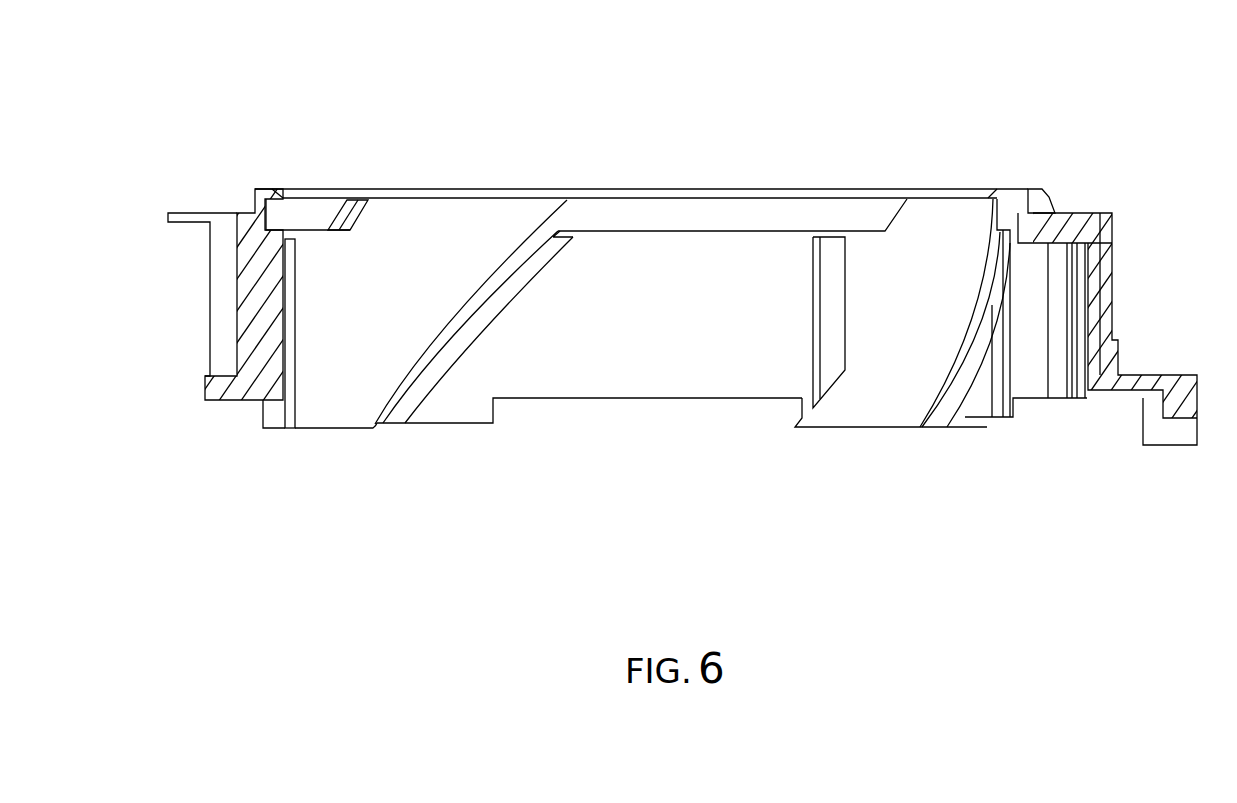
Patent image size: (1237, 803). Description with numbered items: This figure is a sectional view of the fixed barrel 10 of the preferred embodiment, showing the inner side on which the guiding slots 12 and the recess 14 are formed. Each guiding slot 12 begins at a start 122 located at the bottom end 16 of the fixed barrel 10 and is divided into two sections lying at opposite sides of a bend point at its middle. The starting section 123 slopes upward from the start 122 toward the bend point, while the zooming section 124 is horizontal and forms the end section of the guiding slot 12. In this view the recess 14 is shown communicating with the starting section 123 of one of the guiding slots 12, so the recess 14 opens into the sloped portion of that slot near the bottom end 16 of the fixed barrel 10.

The fixed barrel 10 is at (181, 160).
The guiding slot 12 is at (645, 66).
The start 122 is at (393, 424).
The starting section 123 is at (523, 253).
The zooming section 124 is at (633, 212).
The recess 14 is at (1032, 340).
The bottom end 16 is at (840, 427).